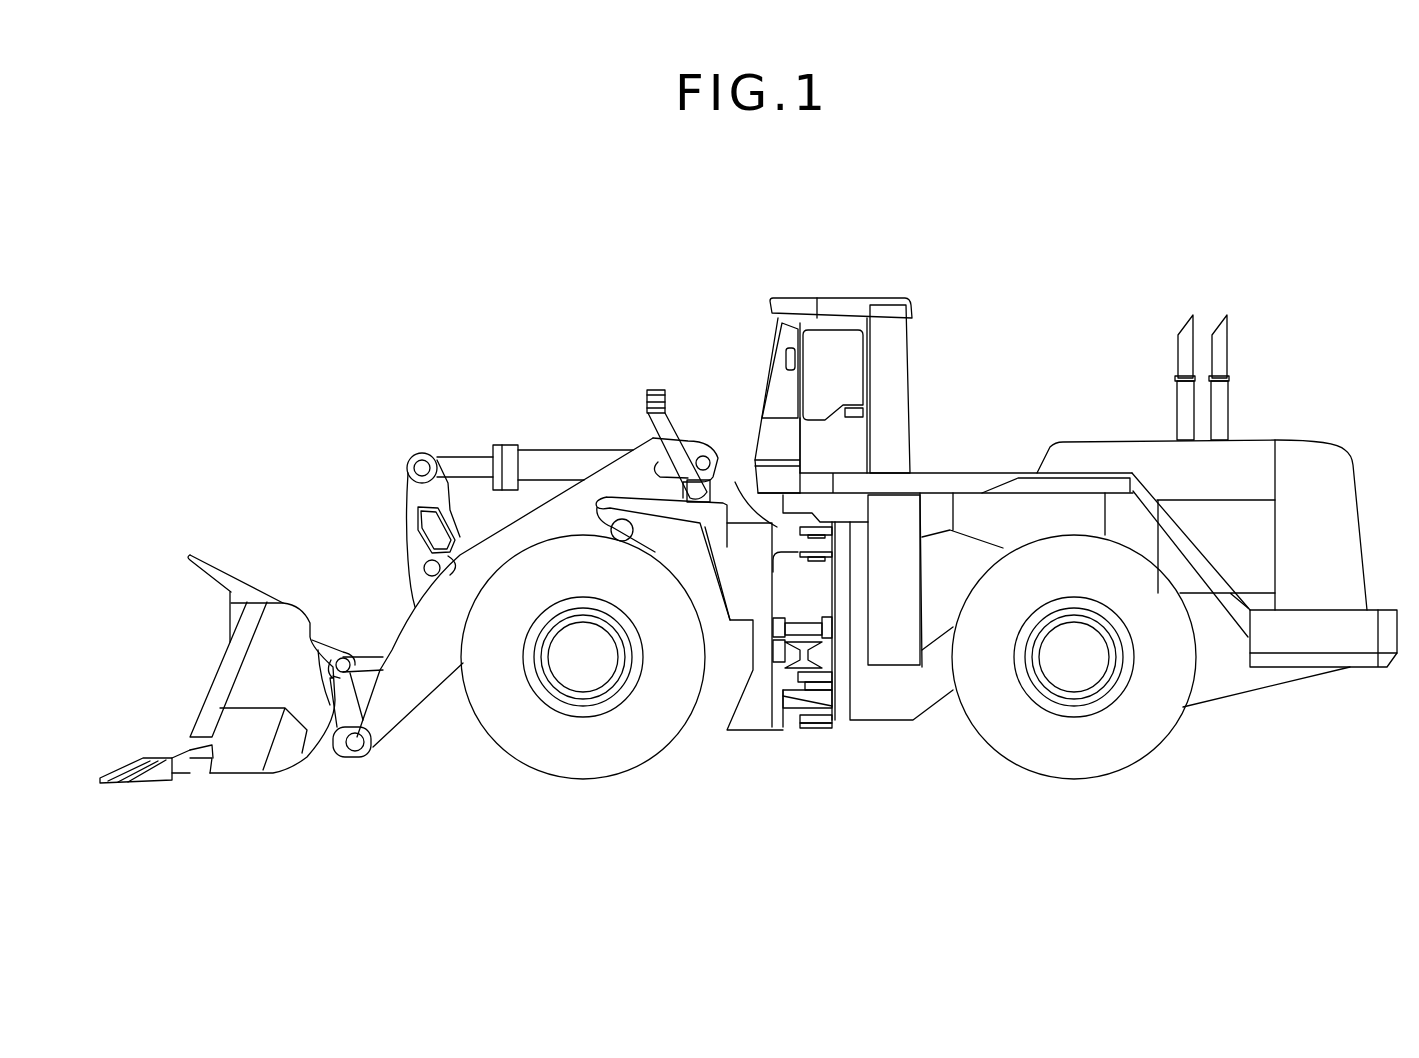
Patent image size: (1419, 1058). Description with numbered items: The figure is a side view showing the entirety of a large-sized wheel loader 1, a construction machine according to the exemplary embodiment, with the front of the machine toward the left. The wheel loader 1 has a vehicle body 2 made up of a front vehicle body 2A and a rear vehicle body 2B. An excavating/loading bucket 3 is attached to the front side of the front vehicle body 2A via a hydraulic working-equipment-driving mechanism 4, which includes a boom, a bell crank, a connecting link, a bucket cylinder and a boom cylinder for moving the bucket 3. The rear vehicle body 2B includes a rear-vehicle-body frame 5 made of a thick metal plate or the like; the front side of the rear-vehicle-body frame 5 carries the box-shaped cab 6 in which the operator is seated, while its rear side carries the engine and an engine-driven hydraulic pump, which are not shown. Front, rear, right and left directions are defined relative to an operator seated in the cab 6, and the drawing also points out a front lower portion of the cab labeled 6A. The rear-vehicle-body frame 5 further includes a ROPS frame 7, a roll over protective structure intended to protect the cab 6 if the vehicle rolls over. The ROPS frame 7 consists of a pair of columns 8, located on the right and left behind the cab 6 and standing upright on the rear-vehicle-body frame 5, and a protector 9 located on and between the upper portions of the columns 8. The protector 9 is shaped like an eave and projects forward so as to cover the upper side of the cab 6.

The wheel loader 1 is at (958, 191).
The vehicle body 2 is at (882, 798).
The front vehicle body 2A is at (745, 712).
The rear vehicle body 2B is at (877, 708).
The excavating/loading bucket 3 is at (220, 662).
The hydraulic working-equipment-driving mechanism 4 is at (432, 429).
The rear-vehicle-body frame 5 is at (1213, 677).
The cab 6 is at (752, 366).
The cab front lower panel 6A is at (772, 447).
The ROPS frame 7 is at (924, 354).
The columns 8 is at (893, 406).
The protector 9 is at (846, 300).